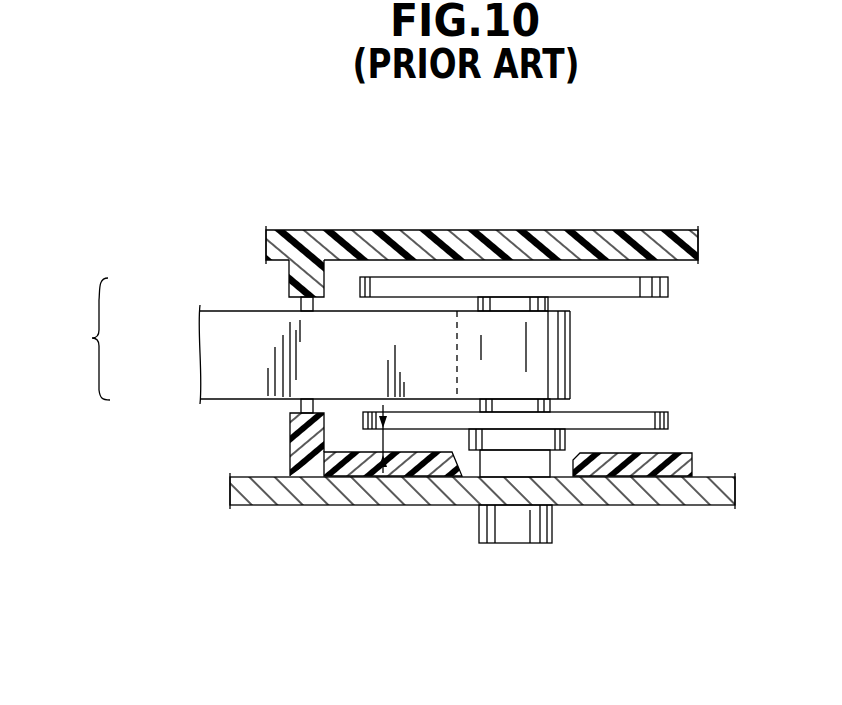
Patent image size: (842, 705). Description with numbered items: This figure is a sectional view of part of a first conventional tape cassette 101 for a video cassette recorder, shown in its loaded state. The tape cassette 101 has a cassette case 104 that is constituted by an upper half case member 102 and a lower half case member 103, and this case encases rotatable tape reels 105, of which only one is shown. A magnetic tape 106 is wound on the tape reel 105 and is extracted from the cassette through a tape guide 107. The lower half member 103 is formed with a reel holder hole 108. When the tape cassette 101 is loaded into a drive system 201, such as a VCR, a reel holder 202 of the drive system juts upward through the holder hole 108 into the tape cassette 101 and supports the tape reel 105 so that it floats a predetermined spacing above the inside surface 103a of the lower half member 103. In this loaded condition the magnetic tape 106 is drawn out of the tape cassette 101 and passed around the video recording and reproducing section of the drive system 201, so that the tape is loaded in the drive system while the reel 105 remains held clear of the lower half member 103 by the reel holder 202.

The tape cassette 101 is at (405, 214).
The upper half case member 102 is at (258, 256).
The lower half case member 103 is at (280, 452).
The inside surface 103a is at (437, 456).
The cassette case 104 is at (71, 339).
The tape reel 105 is at (548, 264).
The magnetic tape 106 is at (413, 323).
The tape guide 107 is at (313, 300).
The reel holder hole 108 is at (457, 455).
The drive system 201 is at (222, 491).
The reel holder 202 is at (540, 517).